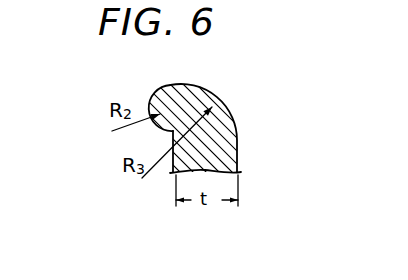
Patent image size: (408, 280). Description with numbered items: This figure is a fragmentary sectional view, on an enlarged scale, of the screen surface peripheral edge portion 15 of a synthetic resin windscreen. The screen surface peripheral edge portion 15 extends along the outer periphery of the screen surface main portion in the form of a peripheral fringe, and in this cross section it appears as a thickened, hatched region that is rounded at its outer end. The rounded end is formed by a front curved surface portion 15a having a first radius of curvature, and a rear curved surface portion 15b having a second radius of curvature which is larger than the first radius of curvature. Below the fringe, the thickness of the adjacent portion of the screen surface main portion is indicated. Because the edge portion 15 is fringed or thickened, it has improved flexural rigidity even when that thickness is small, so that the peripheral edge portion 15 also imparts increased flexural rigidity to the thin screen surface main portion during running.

The screen surface peripheral edge portion 15 is at (190, 93).
The front curved surface portion 15a is at (163, 132).
The rear curved surface portion 15b is at (241, 139).